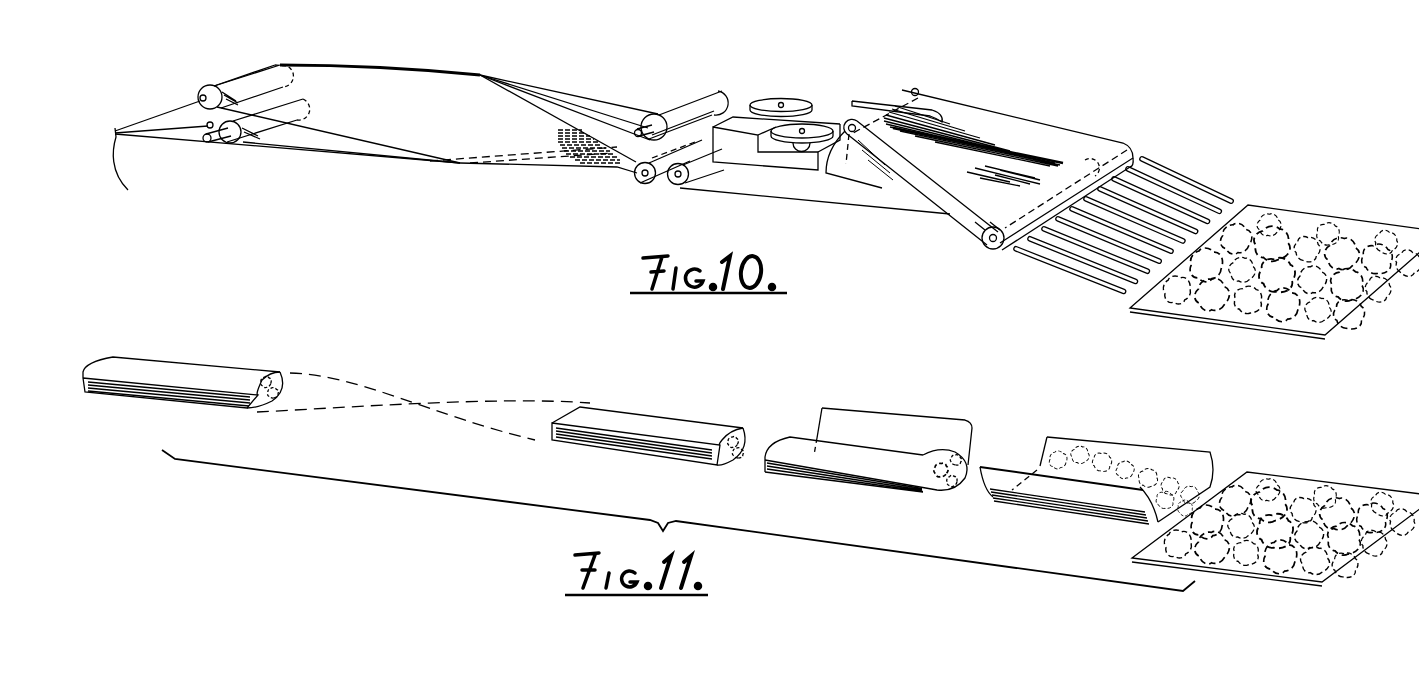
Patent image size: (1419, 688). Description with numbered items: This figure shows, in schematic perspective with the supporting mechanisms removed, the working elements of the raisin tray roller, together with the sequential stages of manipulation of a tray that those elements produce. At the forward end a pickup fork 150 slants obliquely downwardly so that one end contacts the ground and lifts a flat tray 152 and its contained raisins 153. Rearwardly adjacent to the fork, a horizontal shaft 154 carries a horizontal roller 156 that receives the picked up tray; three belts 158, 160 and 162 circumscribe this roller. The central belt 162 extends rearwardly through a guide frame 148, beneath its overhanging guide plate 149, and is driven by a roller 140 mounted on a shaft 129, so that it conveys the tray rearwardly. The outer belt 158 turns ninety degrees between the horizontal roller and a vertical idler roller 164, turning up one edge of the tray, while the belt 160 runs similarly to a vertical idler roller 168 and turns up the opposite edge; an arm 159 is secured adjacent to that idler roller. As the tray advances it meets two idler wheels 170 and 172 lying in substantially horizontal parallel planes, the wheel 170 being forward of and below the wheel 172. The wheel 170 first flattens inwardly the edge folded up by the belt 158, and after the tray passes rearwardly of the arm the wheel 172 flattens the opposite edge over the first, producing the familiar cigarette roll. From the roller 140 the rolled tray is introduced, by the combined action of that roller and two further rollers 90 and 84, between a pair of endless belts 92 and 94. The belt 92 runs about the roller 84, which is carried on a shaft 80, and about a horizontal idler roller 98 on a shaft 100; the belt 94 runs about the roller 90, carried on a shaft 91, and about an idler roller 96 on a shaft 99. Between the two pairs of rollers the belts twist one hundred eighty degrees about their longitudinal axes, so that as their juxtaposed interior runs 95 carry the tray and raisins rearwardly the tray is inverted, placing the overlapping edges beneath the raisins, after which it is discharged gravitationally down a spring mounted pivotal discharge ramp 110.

In FIG. 10, the shaft 80 is at (637, 130).
In FIG. 10, the horizontal roller 84 is at (656, 116).
In FIG. 10, the roller 90 is at (635, 174).
In FIG. 10, the shaft 91 is at (647, 178).
In FIG. 10, the endless belt 92 is at (558, 89).
In FIG. 10, the endless belt 94 is at (530, 104).
In FIG. 10, the interior runs 95 is at (267, 136).
In FIG. 10, the horizontal idler roller 96 is at (210, 86).
In FIG. 10, the horizontal idler roller 98 is at (226, 147).
In FIG. 10, the shaft 99 is at (199, 98).
In FIG. 10, the shaft 100 is at (208, 142).
In FIG. 10, the discharge ramp 110 is at (157, 160).
In FIG. 10, the shaft 129 is at (680, 185).
In FIG. 10, the roller 140 is at (707, 178).
In FIG. 10, the guide frame 148 is at (773, 160).
In FIG. 10, the guide plate 149 is at (749, 118).
In FIG. 10, the pickup fork 150 is at (1176, 170).
In FIG. 10, the tray 152 is at (1283, 332).
In FIG. 11, the tray 152 is at (1267, 584).
In FIG. 10, the raisins 153 is at (1330, 243).
In FIG. 11, the raisins 153 is at (1313, 498).
In FIG. 10, the horizontal shaft 154 is at (993, 249).
In FIG. 10, the horizontal roller 156 is at (978, 238).
In FIG. 10, the belt 158 is at (882, 188).
In FIG. 10, the arm 159 is at (878, 105).
In FIG. 10, the belt 160 is at (993, 128).
In FIG. 10, the belt 162 is at (1035, 167).
In FIG. 10, the vertical idler roller 164 is at (851, 124).
In FIG. 10, the vertical idler roller 168 is at (920, 90).
In FIG. 10, the idler wheel 170 is at (817, 125).
In FIG. 10, the idler wheel 172 is at (772, 98).